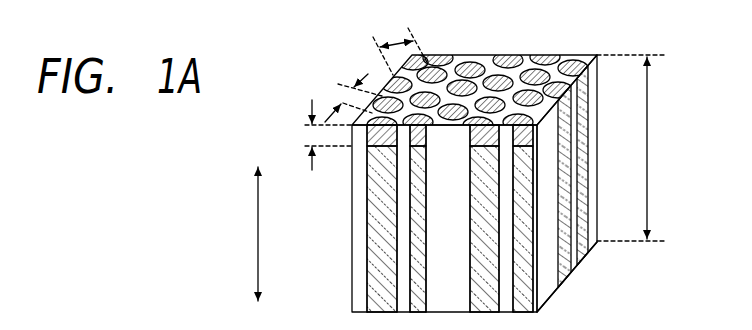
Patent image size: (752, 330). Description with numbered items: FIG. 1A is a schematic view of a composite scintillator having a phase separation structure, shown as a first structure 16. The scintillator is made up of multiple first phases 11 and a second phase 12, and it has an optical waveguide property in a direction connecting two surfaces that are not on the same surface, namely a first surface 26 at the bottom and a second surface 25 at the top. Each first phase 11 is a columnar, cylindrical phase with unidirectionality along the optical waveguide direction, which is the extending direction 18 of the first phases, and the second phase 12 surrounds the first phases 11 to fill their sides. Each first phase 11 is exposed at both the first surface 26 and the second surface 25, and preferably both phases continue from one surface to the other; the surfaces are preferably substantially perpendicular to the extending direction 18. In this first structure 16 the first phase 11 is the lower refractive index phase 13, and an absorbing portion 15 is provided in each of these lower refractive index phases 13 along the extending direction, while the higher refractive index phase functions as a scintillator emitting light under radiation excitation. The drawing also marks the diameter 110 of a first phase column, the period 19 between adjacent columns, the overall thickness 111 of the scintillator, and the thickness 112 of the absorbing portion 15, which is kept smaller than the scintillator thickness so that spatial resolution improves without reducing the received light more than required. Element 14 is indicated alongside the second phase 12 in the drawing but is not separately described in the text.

The first phase 11 is at (402, 229).
The second phase 12 is at (402, 218).
The lower refractive index phase 13 is at (378, 248).
The second dielectric layer 14 is at (356, 203).
The absorbing portion 15 is at (472, 62).
The first structure 16 is at (436, 165).
The extending direction 18 is at (257, 230).
The period 19 is at (397, 43).
The second surface 25 is at (573, 61).
The first surface 26 is at (552, 294).
The diameter 110 is at (348, 92).
The thickness of the scintillator 111 is at (650, 146).
The thickness of the absorbing portion 112 is at (310, 136).